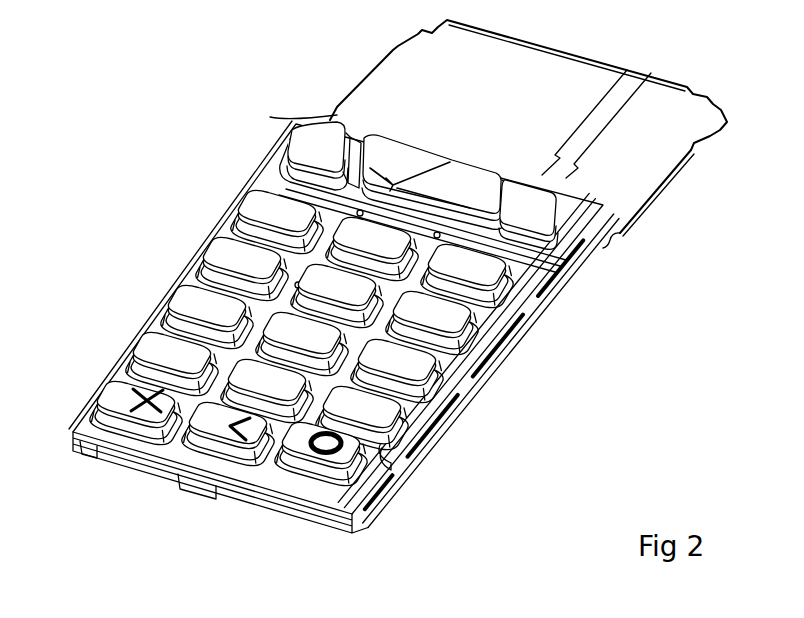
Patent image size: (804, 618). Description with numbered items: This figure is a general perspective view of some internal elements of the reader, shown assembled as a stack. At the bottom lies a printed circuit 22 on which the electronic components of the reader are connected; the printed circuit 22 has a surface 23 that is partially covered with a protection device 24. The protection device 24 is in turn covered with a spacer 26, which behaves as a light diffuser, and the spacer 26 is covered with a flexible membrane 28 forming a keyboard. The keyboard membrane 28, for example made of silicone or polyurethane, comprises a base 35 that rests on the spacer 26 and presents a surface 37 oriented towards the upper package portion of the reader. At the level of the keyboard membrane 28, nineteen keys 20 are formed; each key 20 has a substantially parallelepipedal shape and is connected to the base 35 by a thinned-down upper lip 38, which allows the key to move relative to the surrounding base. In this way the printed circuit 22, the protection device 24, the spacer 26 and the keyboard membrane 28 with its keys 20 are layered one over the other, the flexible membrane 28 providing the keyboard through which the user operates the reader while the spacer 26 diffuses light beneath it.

The key 20 is at (318, 140).
The printed circuit 22 is at (688, 168).
The surface 23 is at (638, 180).
The protection device 24 is at (313, 503).
The spacer 26 is at (558, 280).
The flexible membrane 28 is at (77, 403).
The base 35 is at (491, 373).
The surface 37 is at (498, 309).
The thinned-down upper lip 38 is at (408, 393).